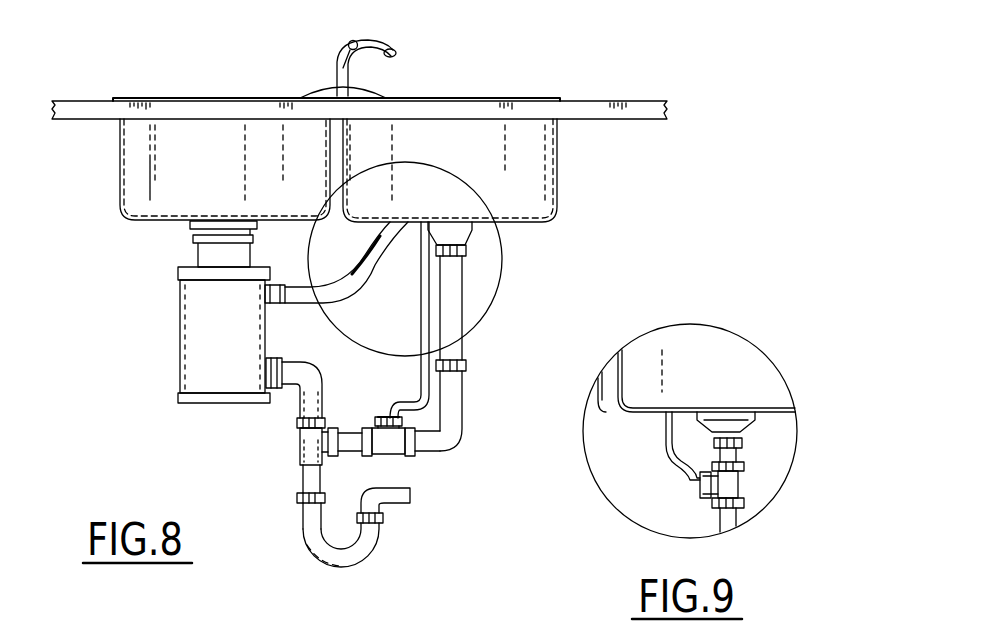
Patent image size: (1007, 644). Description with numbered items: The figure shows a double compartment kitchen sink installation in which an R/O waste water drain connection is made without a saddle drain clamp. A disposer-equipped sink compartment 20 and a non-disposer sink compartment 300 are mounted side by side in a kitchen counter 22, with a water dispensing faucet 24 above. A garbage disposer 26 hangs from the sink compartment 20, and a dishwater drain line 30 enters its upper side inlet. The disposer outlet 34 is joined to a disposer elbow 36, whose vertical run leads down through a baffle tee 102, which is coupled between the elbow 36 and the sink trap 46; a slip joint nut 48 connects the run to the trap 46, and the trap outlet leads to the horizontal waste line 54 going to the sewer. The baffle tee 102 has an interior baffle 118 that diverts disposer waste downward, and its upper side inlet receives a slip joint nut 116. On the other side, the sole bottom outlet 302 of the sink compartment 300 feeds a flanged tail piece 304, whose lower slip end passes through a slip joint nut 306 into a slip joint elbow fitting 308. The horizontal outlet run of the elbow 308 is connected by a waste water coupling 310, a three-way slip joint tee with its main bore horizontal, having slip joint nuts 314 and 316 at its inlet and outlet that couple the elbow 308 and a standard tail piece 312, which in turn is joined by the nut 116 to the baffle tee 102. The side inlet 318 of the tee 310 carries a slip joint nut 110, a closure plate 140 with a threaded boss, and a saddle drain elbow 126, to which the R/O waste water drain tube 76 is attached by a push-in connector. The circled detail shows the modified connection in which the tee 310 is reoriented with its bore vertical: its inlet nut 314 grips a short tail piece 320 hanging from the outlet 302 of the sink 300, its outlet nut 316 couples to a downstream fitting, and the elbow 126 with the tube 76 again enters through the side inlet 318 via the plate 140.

In FIG. 8, the sink compartment 20 is at (118, 178).
In FIG. 9, the sink compartment 20 is at (597, 418).
In FIG. 8, the kitchen counter 22 is at (612, 101).
In FIG. 8, the water dispensing faucet 24 is at (383, 38).
In FIG. 8, the garbage disposer 26 is at (175, 307).
In FIG. 8, the dishwater drain line 30 is at (285, 285).
In FIG. 8, the disposer outlet 34 is at (266, 376).
In FIG. 8, the disposer elbow 36 is at (294, 362).
In FIG. 8, the sink trap 46 is at (380, 553).
In FIG. 8, the slip joint nut 48 is at (297, 498).
In FIG. 8, the horizontal waste line 54 is at (418, 495).
In FIG. 9, the waste water drain tube 76 is at (666, 435).
In FIG. 8, the baffle tee 102 is at (292, 442).
In FIG. 8, the slip joint nut 110 is at (300, 420).
In FIG. 8, the slip joint nut 116 is at (312, 504).
In FIG. 8, the interior baffle 118 is at (320, 450).
In FIG. 8, the saddle drain elbow 126 is at (386, 392).
In FIG. 9, the saddle drain elbow 126 is at (680, 488).
In FIG. 8, the closure plate 140 is at (388, 442).
In FIG. 9, the closure plate 140 is at (707, 502).
In FIG. 8, the non-disposer sink compartment 300 is at (562, 161).
In FIG. 9, the non-disposer sink compartment 300 is at (798, 414).
In FIG. 8, the bottom outlet 302 is at (498, 222).
In FIG. 9, the bottom outlet 302 is at (768, 410).
In FIG. 8, the flanged tail piece 304 is at (462, 282).
In FIG. 8, the slip joint nut 306 is at (466, 360).
In FIG. 8, the slip joint elbow fitting 308 is at (462, 383).
In FIG. 8, the waste water coupling 310 is at (400, 460).
In FIG. 9, the waste water coupling 310 is at (750, 488).
In FIG. 8, the tail piece 312 is at (318, 403).
In FIG. 8, the slip joint nut 314 is at (452, 436).
In FIG. 9, the slip joint nut 314 is at (743, 467).
In FIG. 8, the slip joint nut 316 is at (366, 425).
In FIG. 9, the slip joint nut 316 is at (741, 504).
In FIG. 8, the side inlet 318 is at (402, 421).
In FIG. 9, the short tail piece 320 is at (742, 447).